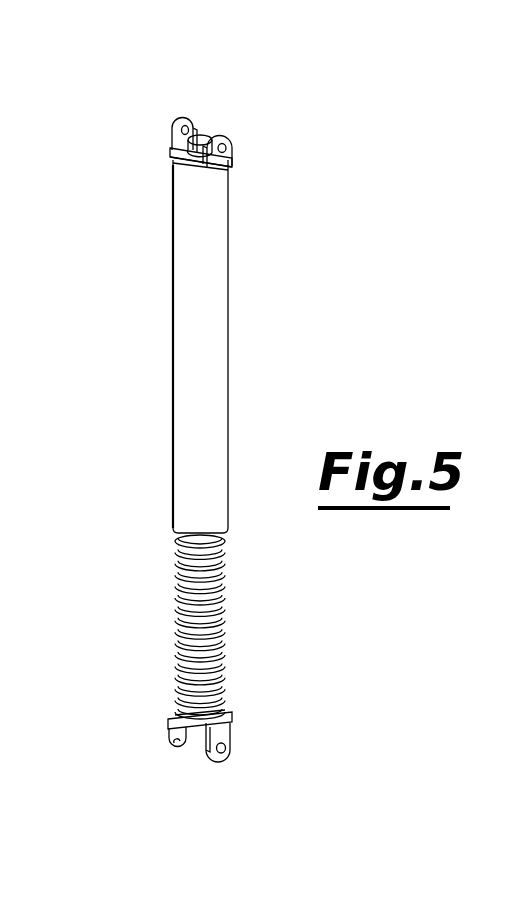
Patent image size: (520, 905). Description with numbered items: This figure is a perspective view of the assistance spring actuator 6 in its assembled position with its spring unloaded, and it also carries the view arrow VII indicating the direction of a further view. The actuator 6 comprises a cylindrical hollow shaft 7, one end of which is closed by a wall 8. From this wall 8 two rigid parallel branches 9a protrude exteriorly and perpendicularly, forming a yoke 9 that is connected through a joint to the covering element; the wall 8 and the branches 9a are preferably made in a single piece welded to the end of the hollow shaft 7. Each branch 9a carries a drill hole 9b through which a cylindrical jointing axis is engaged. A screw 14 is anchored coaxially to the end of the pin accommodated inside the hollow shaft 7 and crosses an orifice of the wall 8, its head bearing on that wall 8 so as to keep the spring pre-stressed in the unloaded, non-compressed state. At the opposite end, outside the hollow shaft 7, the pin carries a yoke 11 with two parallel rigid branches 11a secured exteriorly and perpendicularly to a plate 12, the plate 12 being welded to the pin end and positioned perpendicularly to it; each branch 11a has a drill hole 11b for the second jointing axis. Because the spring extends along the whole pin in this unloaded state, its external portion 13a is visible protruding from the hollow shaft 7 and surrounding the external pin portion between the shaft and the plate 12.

The spring actuator 6 is at (166, 345).
The cylindrical hollow shaft 7 is at (218, 345).
The wall 8 is at (181, 152).
The yoke 9 is at (165, 140).
The branches 9a is at (172, 124).
The drill holes 9b is at (190, 118).
The screw 14 is at (206, 134).
The yoke 11 is at (226, 763).
The branches 11a is at (170, 732).
The drill holes 11b is at (226, 748).
The plate 12 is at (175, 718).
The external portion of the spring 13a is at (220, 622).
The view direction VII is at (126, 394).